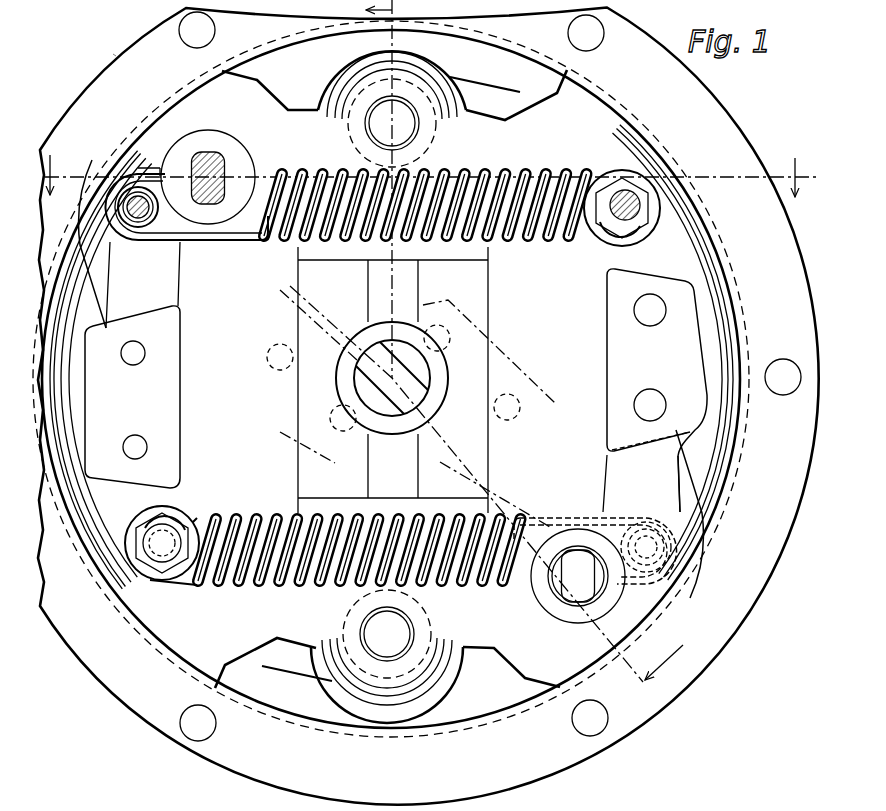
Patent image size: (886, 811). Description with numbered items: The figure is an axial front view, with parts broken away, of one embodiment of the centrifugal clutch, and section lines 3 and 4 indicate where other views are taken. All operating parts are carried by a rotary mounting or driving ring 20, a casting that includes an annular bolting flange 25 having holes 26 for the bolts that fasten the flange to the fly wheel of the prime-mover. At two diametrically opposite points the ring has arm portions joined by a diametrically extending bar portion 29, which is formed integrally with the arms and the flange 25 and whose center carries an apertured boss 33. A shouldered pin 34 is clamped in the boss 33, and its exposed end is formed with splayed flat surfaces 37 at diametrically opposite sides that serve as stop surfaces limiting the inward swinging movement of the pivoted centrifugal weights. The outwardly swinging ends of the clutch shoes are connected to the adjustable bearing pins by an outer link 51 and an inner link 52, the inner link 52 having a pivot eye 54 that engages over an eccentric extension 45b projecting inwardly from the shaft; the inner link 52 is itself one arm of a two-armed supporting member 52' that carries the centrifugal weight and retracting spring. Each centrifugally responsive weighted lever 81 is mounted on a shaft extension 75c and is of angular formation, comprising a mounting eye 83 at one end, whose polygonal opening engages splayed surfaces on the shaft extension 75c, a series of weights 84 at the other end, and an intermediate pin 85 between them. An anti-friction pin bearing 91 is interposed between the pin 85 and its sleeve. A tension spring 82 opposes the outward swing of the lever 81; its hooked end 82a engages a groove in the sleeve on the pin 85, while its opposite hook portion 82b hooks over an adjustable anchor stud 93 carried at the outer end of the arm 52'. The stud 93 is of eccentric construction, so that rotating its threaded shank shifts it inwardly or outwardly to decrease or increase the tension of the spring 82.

The section line 3- 3 is at (486, 345).
The section line 4- 4 is at (432, 167).
The rotary mounting ring 20 is at (113, 54).
The annular bolting flange 25 is at (722, 121).
The holes 26 is at (190, 45).
The bar portion 29 is at (300, 270).
The apertured boss 33 is at (390, 435).
The shouldered pin 34 is at (420, 432).
The splayed flat surfaces 37 is at (418, 370).
The extension 45b is at (405, 117).
The outer link 51 is at (373, 102).
The inner link 52 is at (391, 371).
The two-armed supporting member 52' is at (391, 376).
The pivot eye 54 is at (405, 660).
The shaft extension 75c is at (213, 158).
The weighted lever 81 is at (616, 341).
The tension spring 82 is at (530, 245).
The hooked end 82a is at (104, 192).
The hook portion 82b is at (150, 572).
The mounting eye 83 is at (250, 165).
The weights 84 is at (652, 445).
The intermediate pin 85 is at (125, 215).
The anti-friction pin bearing 91 is at (138, 228).
The adjustable anchor stud 93 is at (640, 206).